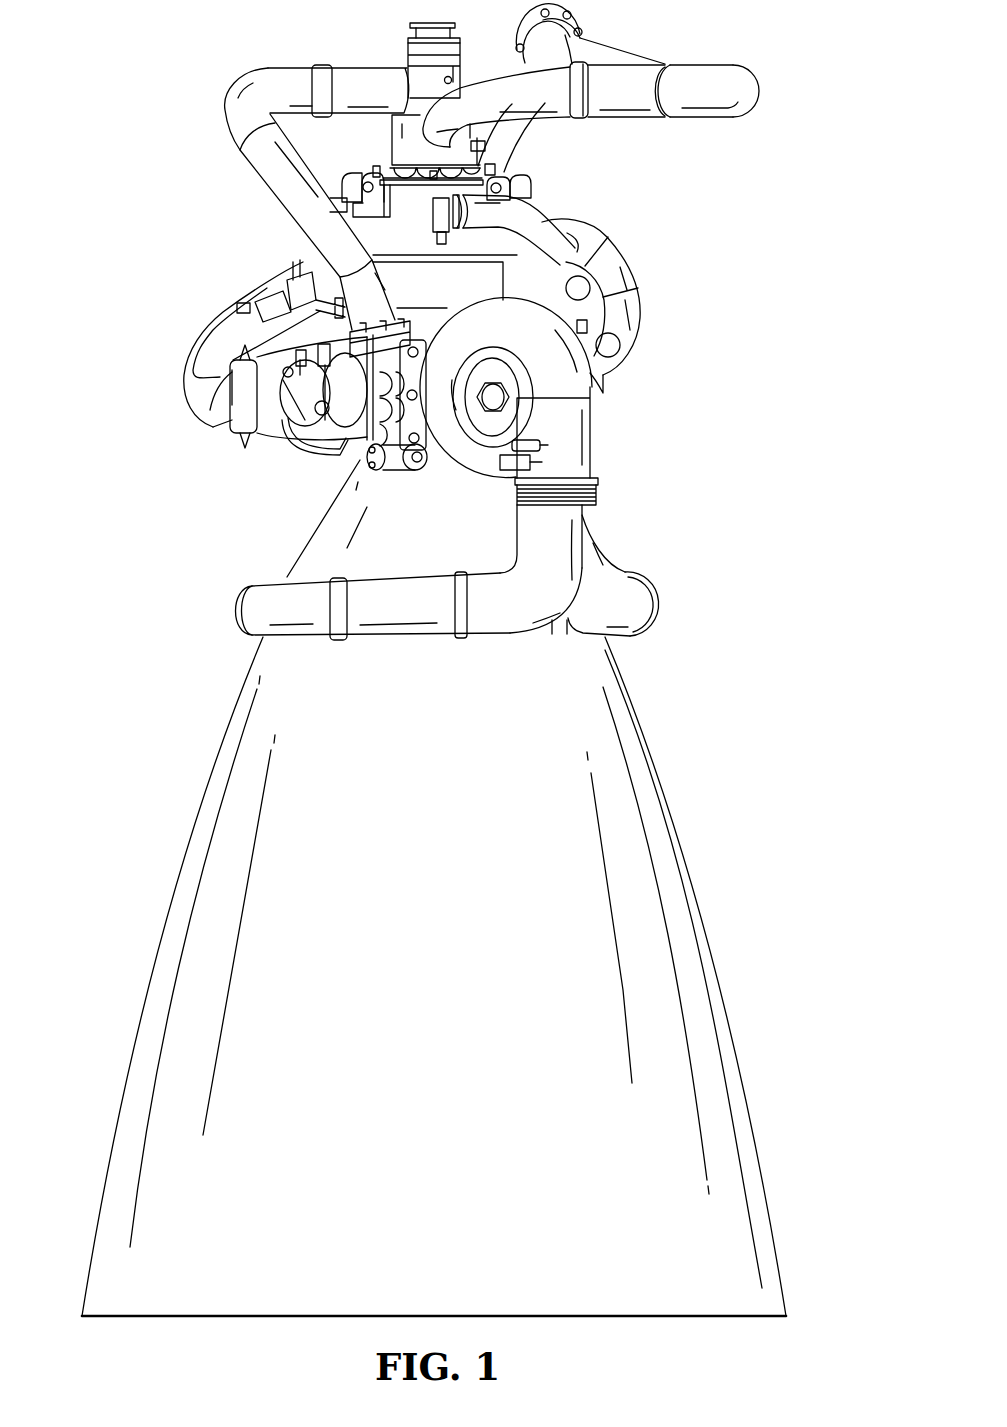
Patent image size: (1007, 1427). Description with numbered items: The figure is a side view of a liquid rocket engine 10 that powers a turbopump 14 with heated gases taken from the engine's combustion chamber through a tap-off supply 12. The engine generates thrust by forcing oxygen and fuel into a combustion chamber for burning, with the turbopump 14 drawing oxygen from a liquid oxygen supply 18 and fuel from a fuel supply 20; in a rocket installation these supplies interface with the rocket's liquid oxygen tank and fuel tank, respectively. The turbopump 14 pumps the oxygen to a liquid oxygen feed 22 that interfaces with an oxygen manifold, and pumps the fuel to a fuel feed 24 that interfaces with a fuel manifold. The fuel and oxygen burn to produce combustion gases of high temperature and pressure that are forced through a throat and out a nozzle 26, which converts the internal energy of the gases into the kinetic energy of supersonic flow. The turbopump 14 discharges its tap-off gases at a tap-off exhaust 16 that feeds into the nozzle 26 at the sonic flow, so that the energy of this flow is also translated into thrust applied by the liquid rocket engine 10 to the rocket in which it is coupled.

The liquid rocket engine 10 is at (134, 77).
The tap-off supply 12 is at (283, 245).
The turbopump 14 is at (268, 440).
The tap-off exhaust 16 is at (593, 440).
The liquid oxygen supply 18 is at (357, 67).
The fuel supply 20 is at (705, 118).
The liquid oxygen feed 22 is at (540, 152).
The fuel feed 24 is at (541, 218).
The nozzle 26 is at (750, 1125).